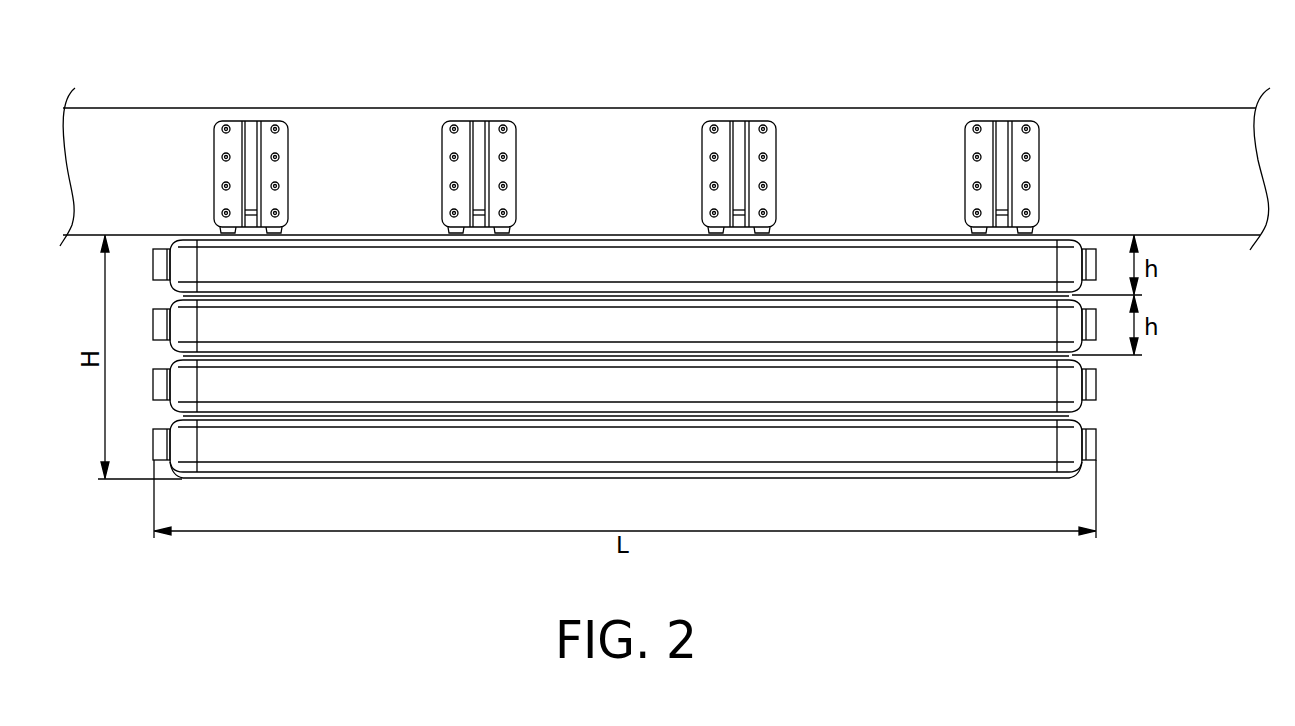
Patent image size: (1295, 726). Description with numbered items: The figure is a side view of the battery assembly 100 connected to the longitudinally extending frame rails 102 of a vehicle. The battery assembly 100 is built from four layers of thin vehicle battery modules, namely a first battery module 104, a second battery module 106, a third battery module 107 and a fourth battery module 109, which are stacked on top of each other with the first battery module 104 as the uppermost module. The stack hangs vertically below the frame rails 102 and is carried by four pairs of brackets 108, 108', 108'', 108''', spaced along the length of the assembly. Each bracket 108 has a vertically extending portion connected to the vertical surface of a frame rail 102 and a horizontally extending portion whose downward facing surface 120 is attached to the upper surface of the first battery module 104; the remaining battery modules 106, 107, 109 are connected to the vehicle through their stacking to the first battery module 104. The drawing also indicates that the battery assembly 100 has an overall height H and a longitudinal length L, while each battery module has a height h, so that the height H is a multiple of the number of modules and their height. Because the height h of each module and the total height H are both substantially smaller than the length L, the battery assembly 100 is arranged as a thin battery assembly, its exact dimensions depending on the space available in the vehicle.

The battery assembly 100 is at (717, 422).
The longitudinally extending frame rails 102 is at (1167, 145).
The first battery module 104 is at (706, 263).
The second battery module 106 is at (787, 322).
The third battery module 107 is at (871, 386).
The fourth battery module 109 is at (950, 447).
The bracket 108 is at (285, 138).
The bracket 108' is at (516, 138).
The bracket 108'' is at (779, 138).
The bracket 108''' is at (1045, 138).
The downward facing surface 120 is at (217, 232).